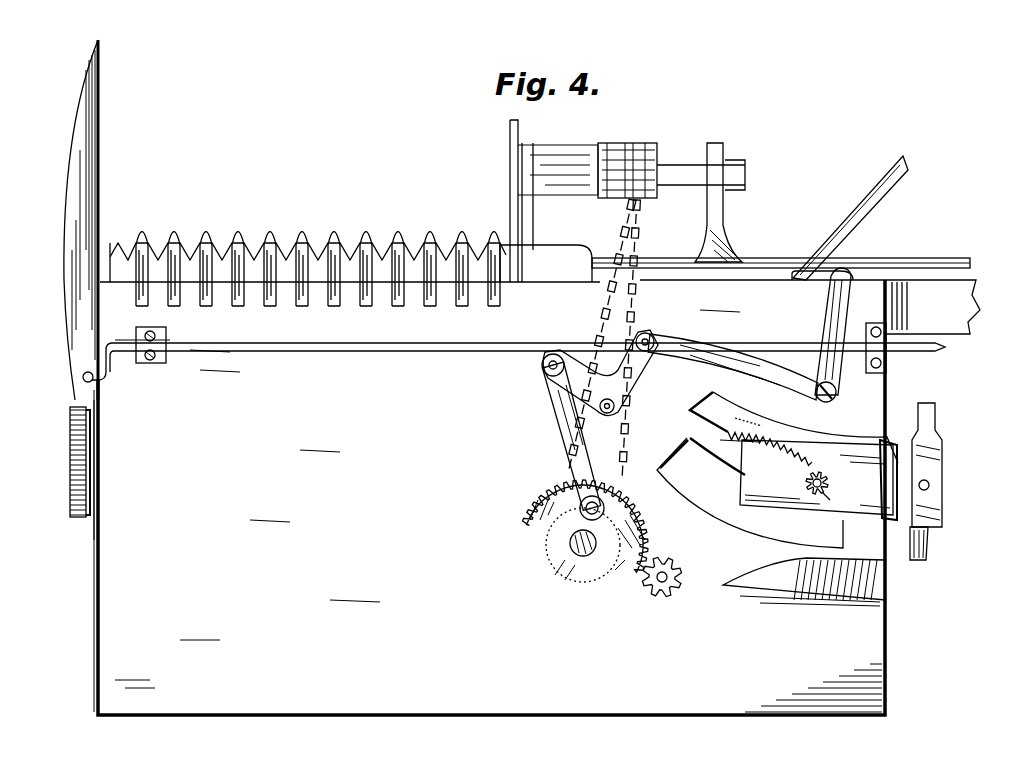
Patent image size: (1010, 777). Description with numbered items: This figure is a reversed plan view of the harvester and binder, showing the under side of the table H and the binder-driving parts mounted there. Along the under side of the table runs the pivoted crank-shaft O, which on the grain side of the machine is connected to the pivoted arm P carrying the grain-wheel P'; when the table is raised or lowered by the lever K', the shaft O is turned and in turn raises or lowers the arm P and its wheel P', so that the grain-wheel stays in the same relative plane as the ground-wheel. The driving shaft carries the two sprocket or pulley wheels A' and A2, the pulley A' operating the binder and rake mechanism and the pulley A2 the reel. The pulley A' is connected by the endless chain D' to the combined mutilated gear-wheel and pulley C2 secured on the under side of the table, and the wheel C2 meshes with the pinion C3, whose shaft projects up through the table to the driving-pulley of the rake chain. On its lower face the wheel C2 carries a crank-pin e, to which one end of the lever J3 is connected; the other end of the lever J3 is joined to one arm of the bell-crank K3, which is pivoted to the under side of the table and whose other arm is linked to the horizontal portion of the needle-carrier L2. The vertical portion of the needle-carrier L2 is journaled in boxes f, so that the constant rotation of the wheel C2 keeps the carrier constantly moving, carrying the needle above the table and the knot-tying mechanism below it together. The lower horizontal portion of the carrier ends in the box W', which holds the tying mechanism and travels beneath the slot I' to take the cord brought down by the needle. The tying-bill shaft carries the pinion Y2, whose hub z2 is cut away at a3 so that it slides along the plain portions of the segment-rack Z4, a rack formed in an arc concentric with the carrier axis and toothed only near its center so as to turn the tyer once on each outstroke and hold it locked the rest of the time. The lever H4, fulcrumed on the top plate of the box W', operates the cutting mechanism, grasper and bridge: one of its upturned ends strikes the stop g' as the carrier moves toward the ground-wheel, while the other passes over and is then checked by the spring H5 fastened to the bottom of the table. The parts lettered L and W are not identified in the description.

The table H is at (489, 479).
The pivoted arm P is at (77, 483).
The grain-wheel P' is at (63, 462).
The frame L is at (932, 307).
The sprocket or pulley wheel A2 is at (622, 130).
The pulley A' is at (699, 191).
The lever W is at (850, 218).
The boxes f is at (852, 270).
The crank-shaft O is at (385, 352).
The needle-carrier L2 is at (832, 318).
The lever K' is at (736, 367).
The bell-crank K3 is at (628, 394).
The lever J3 is at (566, 440).
The endless chain D' is at (621, 347).
The combined mutilated gear-wheel and pulley C2 is at (585, 531).
The crank-pin e is at (603, 508).
The pinion C3 is at (690, 572).
The slot I' is at (750, 493).
The segment-rack Z4 is at (773, 438).
The pinion Y2 is at (816, 477).
The cut-away portion a3 is at (826, 470).
The hub z2 is at (831, 500).
The box W' is at (874, 480).
The stop g' is at (923, 454).
The lever H4 is at (930, 545).
The spring H5 is at (804, 582).